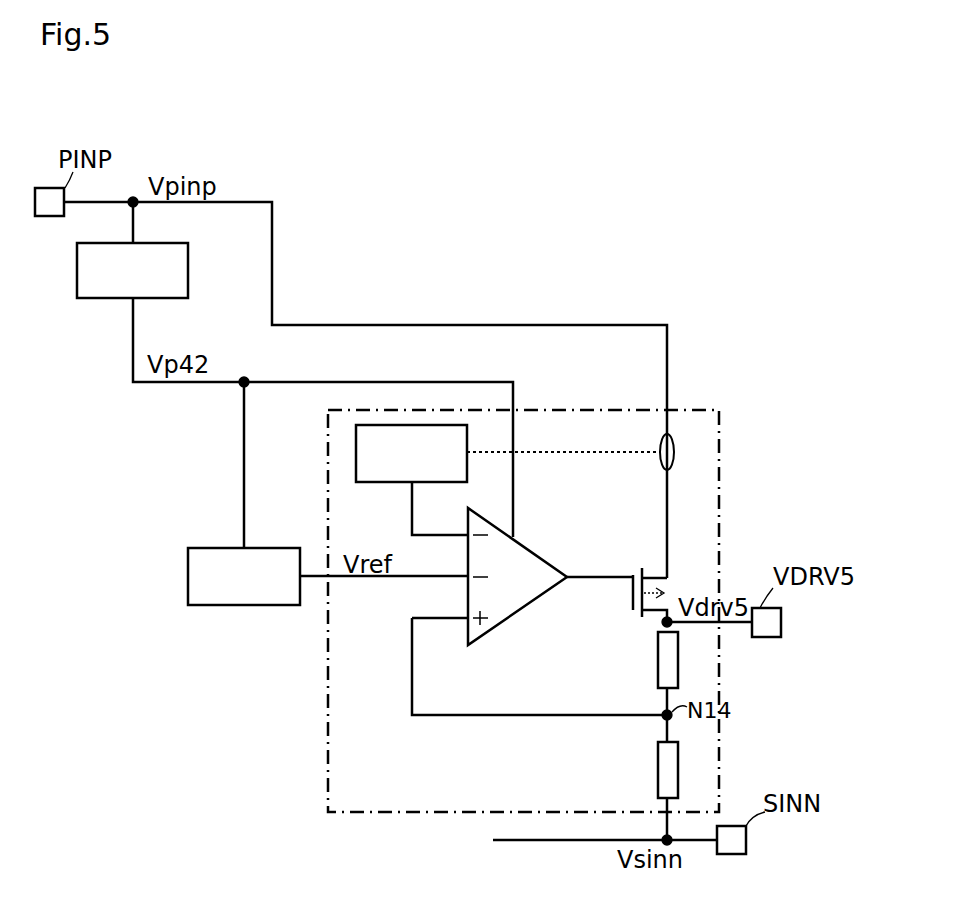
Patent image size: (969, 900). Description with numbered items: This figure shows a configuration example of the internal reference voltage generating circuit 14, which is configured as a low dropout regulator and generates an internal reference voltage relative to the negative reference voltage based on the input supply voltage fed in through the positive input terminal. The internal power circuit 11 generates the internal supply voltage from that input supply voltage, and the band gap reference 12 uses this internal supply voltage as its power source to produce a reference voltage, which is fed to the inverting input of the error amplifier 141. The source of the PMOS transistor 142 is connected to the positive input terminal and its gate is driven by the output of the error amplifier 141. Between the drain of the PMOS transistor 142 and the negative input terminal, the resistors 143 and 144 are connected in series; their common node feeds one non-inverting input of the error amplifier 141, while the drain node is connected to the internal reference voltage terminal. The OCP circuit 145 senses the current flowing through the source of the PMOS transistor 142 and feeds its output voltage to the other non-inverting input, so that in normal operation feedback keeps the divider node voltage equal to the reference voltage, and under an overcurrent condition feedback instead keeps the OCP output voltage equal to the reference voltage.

The internal power circuit 11 is at (188, 249).
The band gap reference 12 is at (285, 548).
The internal reference voltage generating circuit 14 is at (703, 410).
The error amplifier 141 is at (527, 549).
The PMOS transistor 142 is at (633, 600).
The resistor 143 is at (658, 661).
The resistor 144 is at (658, 775).
The OCP circuit 145 is at (373, 482).